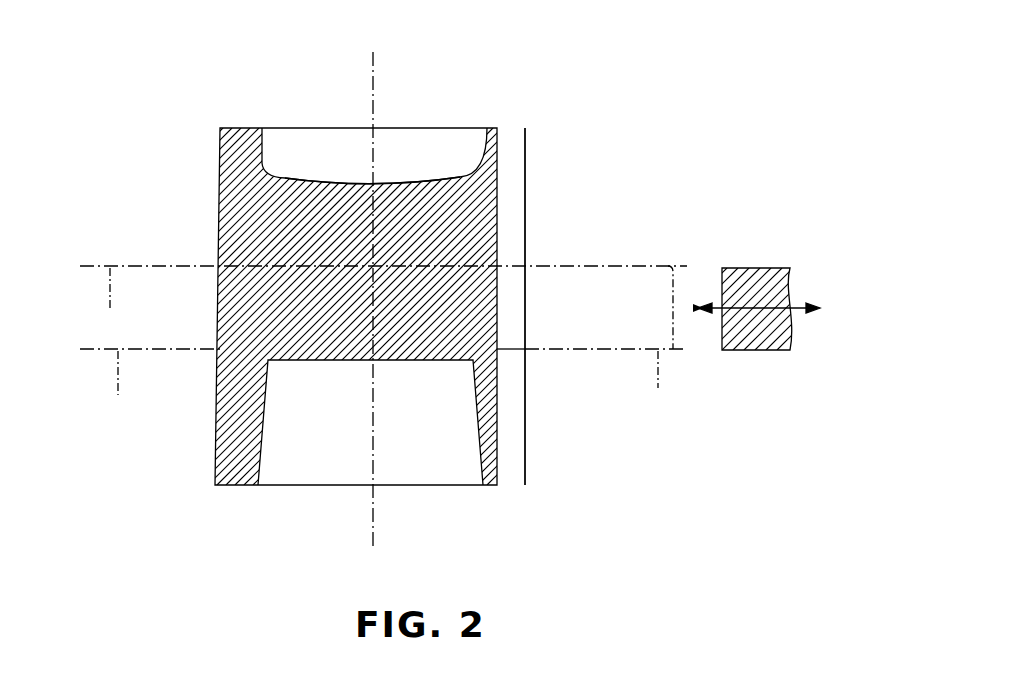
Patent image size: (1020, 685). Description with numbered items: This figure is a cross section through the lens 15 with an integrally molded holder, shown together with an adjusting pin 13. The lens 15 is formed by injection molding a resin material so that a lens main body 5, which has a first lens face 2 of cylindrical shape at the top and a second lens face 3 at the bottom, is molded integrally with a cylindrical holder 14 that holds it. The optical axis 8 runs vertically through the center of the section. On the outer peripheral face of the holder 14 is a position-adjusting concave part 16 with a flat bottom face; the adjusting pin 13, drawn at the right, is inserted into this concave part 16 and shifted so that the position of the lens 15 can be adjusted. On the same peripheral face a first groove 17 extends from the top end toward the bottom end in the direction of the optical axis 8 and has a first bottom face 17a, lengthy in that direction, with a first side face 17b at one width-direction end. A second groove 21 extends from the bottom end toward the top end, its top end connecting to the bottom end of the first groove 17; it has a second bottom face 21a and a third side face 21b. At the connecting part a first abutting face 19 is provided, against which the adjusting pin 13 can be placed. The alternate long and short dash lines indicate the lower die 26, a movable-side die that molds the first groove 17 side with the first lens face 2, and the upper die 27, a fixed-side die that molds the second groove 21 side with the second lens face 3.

The first lens face 2 is at (404, 182).
The second lens face 3 is at (404, 362).
The lens main body 5 is at (296, 177).
The optical axis 8 is at (373, 94).
The adjusting pin 13 is at (757, 268).
The holder 14 is at (220, 232).
The lens 15 is at (197, 124).
The position-adjusting concave part 16 is at (509, 316).
The first groove 17 is at (509, 218).
The first bottom face 17a is at (497, 243).
The first side face 17b is at (514, 191).
The first abutting face 19 is at (514, 280).
The second groove 21 is at (509, 410).
The second bottom face 21a is at (500, 370).
The third side face 21b is at (510, 465).
The lower die 26 is at (394, 345).
The upper die 27 is at (127, 263).